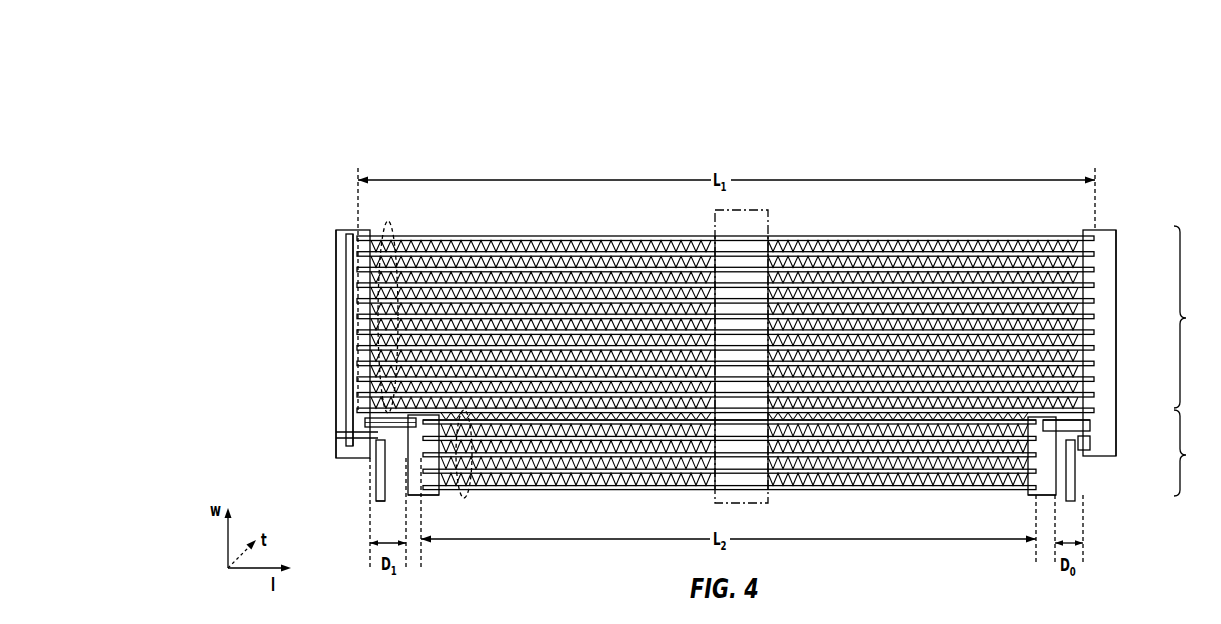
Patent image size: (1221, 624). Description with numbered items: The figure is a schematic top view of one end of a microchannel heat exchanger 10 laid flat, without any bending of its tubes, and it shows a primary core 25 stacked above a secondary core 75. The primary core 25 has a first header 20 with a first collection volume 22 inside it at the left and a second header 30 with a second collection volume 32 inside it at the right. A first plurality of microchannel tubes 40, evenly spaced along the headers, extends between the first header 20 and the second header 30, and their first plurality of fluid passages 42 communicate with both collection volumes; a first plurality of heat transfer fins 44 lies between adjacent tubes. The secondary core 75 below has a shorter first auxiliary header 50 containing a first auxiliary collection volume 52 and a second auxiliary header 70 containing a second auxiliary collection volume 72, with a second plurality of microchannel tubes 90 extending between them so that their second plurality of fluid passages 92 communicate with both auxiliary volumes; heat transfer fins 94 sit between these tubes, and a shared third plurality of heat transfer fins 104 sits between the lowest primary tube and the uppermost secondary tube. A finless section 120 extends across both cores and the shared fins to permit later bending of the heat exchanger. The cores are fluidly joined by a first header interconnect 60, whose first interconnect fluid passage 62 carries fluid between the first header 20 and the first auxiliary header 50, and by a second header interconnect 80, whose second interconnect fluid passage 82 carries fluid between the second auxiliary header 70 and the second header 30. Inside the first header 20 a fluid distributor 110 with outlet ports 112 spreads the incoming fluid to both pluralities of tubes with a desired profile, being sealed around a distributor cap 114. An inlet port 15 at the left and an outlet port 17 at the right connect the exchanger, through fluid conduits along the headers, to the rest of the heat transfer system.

The microchannel heat exchanger 10 is at (457, 96).
The inlet port 15 is at (370, 497).
The outlet port 17 is at (1065, 494).
The first header 20 is at (343, 222).
The first collection volume 22 is at (332, 247).
The primary core 25 is at (1180, 311).
The second header 30 is at (1108, 222).
The second collection volume 32 is at (1102, 242).
The first plurality of microchannel tubes 40 is at (382, 216).
The first plurality of fluid passages 42 is at (541, 228).
The first plurality of heat transfer fins 44 is at (618, 240).
The first auxiliary header 50 is at (407, 488).
The first auxiliary collection volume 52 is at (405, 475).
The first header interconnect 60 is at (363, 412).
The first interconnect fluid passage 62 is at (360, 415).
The second auxiliary header 70 is at (1037, 488).
The second auxiliary collection volume 72 is at (1037, 473).
The secondary core 75 is at (1180, 446).
The second header interconnect 80 is at (1082, 418).
The second interconnect fluid passage 82 is at (1080, 413).
The second plurality of microchannel tubes 90 is at (457, 490).
The second plurality of fluid passages 92 is at (508, 481).
The heat transfer fins 94 is at (543, 470).
The third plurality of heat transfer fins 104 is at (647, 413).
The fluid distributor 110 is at (345, 383).
The outlet ports 112 is at (343, 342).
The distributor cap 114 is at (328, 427).
The finless section 120 is at (760, 218).